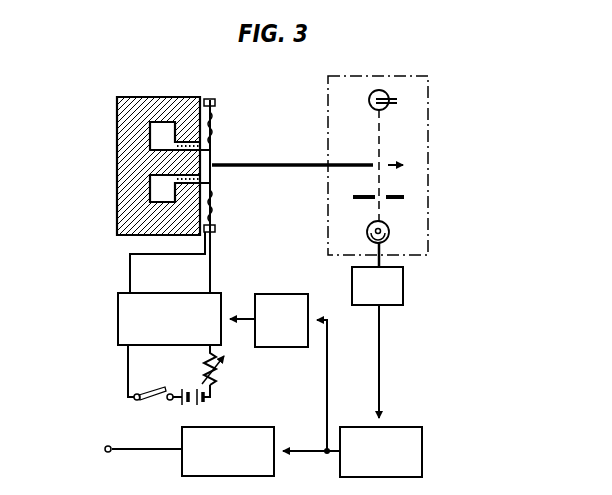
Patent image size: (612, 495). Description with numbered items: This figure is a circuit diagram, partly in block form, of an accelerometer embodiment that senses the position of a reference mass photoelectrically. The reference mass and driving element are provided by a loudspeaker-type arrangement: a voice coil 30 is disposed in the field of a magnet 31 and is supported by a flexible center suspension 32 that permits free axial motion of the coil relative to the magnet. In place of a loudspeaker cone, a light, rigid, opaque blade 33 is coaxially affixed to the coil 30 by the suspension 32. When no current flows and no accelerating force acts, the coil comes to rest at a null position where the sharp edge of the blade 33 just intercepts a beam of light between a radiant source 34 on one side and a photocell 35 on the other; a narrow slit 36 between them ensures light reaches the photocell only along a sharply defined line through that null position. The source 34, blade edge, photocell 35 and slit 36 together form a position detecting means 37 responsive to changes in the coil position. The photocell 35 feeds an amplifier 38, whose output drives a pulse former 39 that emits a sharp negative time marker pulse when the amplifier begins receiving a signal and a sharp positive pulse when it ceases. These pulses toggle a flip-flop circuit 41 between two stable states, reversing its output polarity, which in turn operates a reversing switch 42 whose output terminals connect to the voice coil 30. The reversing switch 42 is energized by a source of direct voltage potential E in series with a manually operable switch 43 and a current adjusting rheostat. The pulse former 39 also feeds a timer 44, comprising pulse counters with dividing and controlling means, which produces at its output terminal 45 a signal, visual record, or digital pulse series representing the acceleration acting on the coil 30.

The coil 30 is at (203, 144).
The magnet 31 is at (117, 136).
The flexible center suspension 32 is at (214, 205).
The blade 33 is at (262, 164).
The radiant source 34 is at (384, 91).
The photocell 35 is at (389, 223).
The slit 36 is at (406, 193).
The position detecting means 37 is at (430, 128).
The amplifier 38 is at (405, 286).
The pulse former 39 is at (418, 426).
The flip-flop circuit 41 is at (281, 293).
The reversing switch 42 is at (117, 318).
The manually operable switch 43 is at (170, 392).
The timer 44 is at (281, 426).
The output terminal 45 is at (105, 451).
The source of direct voltage potential E is at (205, 403).